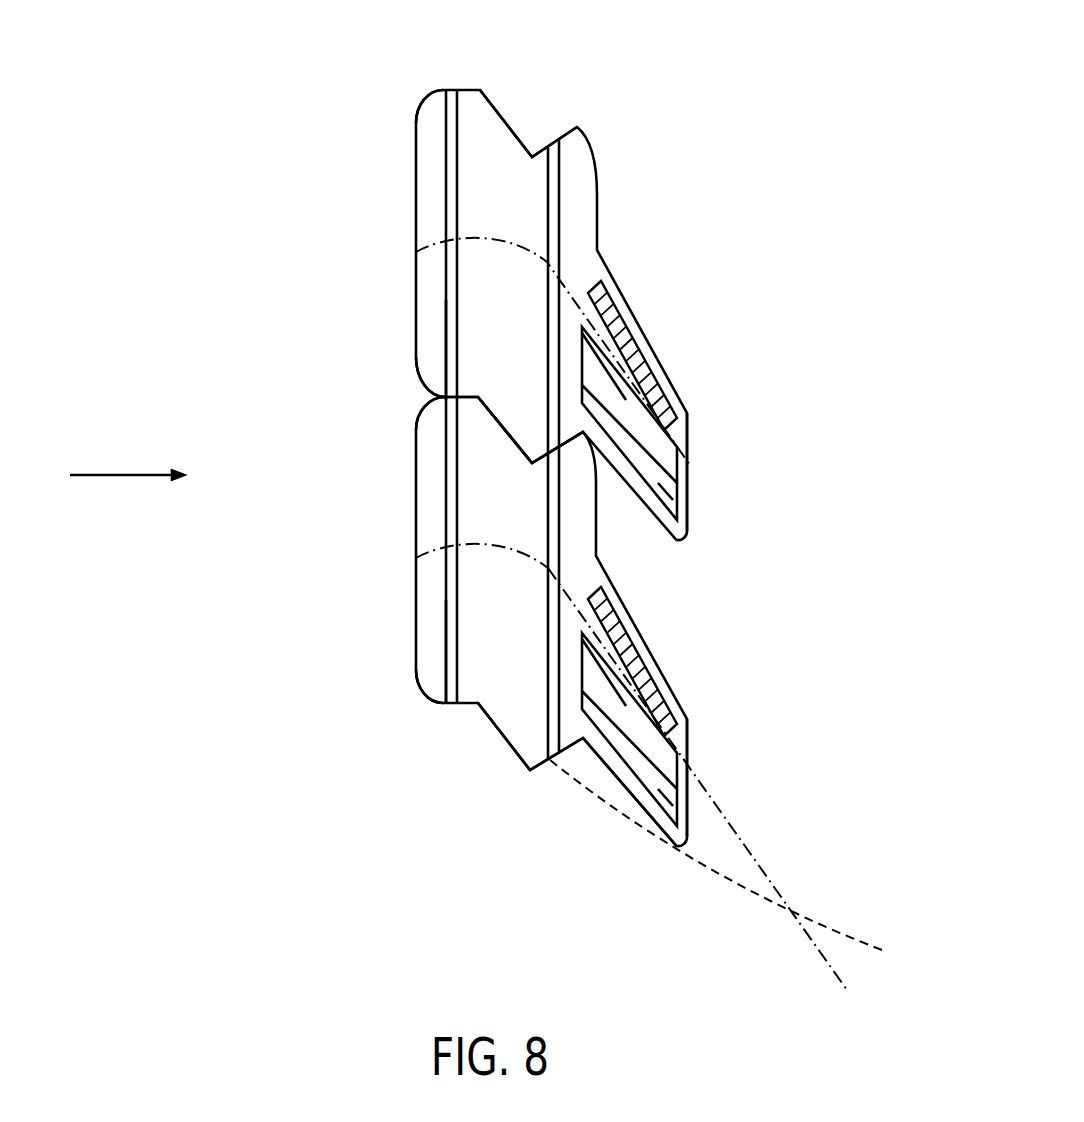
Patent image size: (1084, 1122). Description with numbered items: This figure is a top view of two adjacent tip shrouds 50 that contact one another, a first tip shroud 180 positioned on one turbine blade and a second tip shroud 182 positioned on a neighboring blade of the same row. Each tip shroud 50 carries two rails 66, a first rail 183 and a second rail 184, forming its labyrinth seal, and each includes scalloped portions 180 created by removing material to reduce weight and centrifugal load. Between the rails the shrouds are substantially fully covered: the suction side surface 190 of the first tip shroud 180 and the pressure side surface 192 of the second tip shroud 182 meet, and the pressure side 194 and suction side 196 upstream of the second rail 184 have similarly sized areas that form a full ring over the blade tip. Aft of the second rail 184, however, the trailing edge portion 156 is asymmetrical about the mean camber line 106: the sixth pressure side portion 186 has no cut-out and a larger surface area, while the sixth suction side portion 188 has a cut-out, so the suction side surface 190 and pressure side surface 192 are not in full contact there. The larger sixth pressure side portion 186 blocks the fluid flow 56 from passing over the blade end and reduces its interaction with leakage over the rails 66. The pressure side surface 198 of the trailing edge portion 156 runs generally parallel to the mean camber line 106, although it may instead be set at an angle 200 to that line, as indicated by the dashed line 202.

The tip shroud 50 is at (508, 468).
The fluid flow 56 is at (128, 472).
The rails 66 is at (557, 213).
The mean camber line 106 is at (405, 250).
The trailing edge portion 156 is at (701, 492).
The first tip shroud 180 is at (378, 307).
The second tip shroud 182 is at (378, 617).
The first rail 183 is at (450, 320).
The second rail 184 is at (555, 168).
The sixth pressure side portion 186 is at (676, 515).
The sixth suction side portion 188 is at (637, 360).
The suction side surface 190 is at (508, 442).
The pressure side surface 192 is at (500, 412).
The pressure side 194 is at (485, 308).
The suction side 196 is at (483, 122).
The pressure side surface of the trailing edge portion 198 is at (627, 790).
The angle 200 is at (769, 883).
The dashed line 202 is at (610, 805).